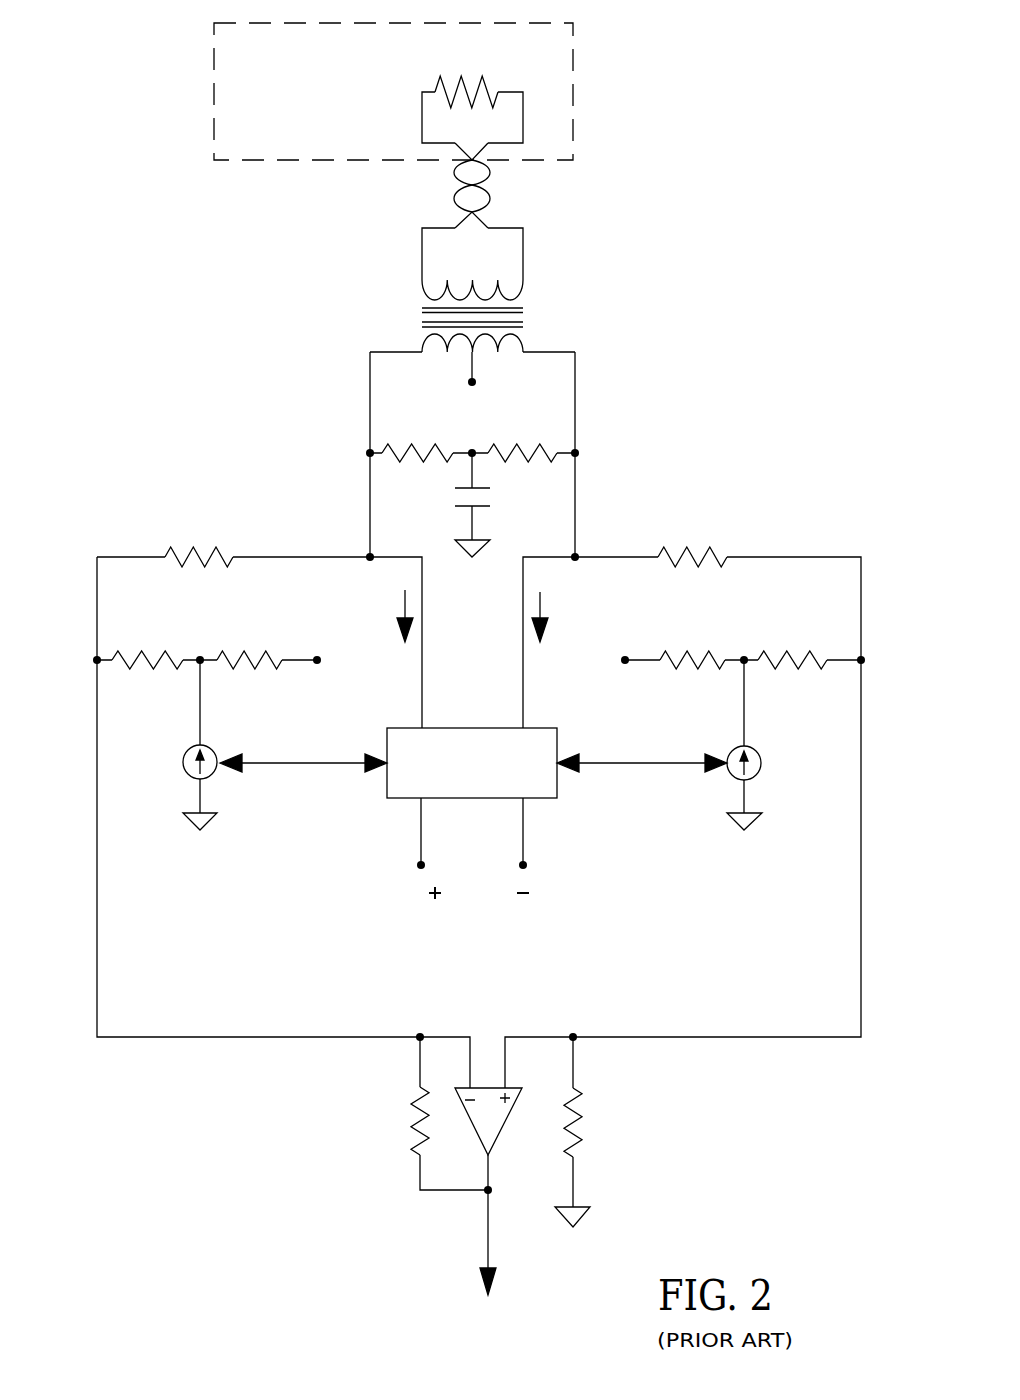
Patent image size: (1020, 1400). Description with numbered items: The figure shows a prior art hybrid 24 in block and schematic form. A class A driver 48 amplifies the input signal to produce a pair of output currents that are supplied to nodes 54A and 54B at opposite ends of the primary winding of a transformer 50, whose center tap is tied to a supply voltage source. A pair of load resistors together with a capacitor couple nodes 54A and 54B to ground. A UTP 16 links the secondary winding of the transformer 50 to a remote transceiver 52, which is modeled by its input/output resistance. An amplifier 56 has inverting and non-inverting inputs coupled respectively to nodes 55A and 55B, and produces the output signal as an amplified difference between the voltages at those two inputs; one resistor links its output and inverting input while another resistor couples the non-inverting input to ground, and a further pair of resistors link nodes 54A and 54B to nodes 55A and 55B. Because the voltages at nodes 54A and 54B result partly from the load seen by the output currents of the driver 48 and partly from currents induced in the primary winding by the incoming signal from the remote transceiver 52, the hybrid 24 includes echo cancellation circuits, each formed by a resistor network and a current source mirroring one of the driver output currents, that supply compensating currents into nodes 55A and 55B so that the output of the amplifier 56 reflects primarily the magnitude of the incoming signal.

The hybrid 24 is at (240, 1140).
The remote transceiver 52 is at (562, 146).
The UTP 16 is at (490, 197).
The transformer 50 is at (522, 315).
The node 54A is at (370, 557).
The node 54B is at (575, 557).
The class A driver 48 is at (543, 791).
The node 55A is at (420, 1037).
The node 55B is at (573, 1037).
The amplifier 56 is at (498, 1127).